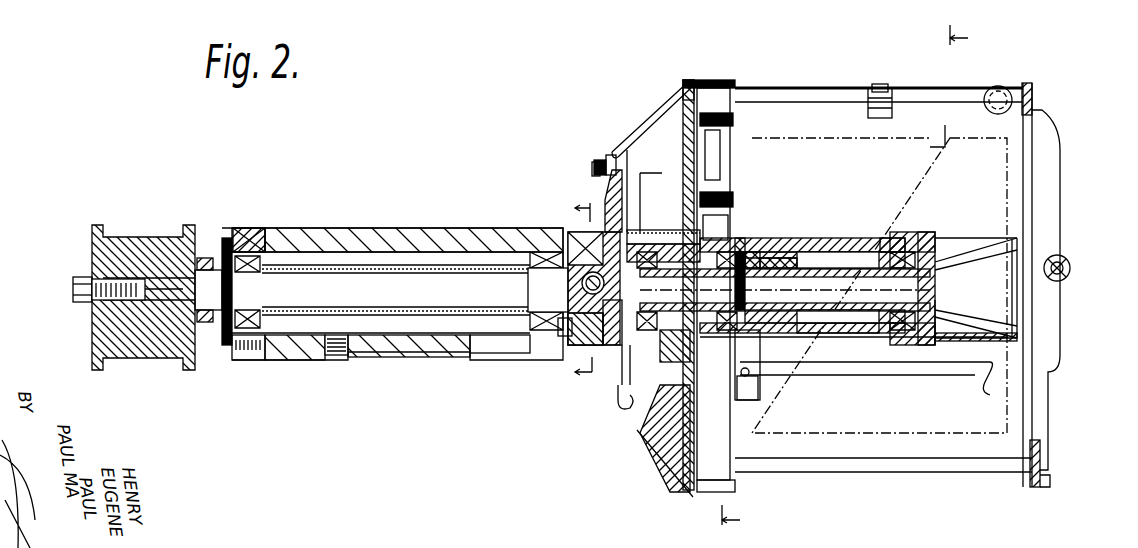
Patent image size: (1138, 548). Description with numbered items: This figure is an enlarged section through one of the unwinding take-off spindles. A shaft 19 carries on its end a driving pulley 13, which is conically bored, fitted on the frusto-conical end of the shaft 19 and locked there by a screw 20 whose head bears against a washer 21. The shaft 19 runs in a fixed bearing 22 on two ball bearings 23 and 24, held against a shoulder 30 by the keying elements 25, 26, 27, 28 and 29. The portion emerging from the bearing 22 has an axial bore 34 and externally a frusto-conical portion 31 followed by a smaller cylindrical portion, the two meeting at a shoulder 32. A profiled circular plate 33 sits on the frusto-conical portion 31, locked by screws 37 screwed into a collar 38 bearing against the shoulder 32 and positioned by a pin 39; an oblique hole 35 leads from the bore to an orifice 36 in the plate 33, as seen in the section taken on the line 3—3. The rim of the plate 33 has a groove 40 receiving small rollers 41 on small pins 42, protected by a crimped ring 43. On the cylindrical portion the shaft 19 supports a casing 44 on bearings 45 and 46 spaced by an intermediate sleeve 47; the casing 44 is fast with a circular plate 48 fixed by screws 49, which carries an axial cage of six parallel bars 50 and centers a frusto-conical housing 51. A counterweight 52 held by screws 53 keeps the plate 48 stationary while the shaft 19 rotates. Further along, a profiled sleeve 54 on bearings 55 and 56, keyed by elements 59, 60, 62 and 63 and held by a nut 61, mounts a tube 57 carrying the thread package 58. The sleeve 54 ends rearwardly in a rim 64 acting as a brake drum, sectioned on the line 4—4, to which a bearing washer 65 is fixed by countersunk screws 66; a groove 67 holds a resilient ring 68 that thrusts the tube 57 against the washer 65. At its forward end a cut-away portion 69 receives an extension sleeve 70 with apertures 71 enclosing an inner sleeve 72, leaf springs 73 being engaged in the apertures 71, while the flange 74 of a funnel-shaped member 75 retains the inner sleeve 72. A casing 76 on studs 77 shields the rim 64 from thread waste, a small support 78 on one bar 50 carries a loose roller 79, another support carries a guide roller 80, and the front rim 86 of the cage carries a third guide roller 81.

The section line 3— 3 is at (582, 290).
The section line 4— 4 is at (856, 278).
The driving pulley 13 is at (143, 240).
The shaft 19 is at (314, 340).
The screw 20 is at (78, 284).
The washer 21 is at (97, 283).
The fixed bearing 22 is at (349, 343).
The ball bearing 23 is at (286, 240).
The ball bearing 24 is at (455, 235).
The keying element 25 is at (207, 258).
The keying element 26 is at (252, 256).
The keying element 27 is at (227, 256).
The keying element 28 is at (397, 345).
The keying element 29 is at (527, 284).
The shoulder 30 is at (548, 290).
The frusto-conical portion 31 is at (492, 345).
The shoulder 32 is at (588, 340).
The profiled circular plate 33 is at (620, 412).
The axial bore 34 is at (872, 305).
The oblique hole 35 is at (545, 258).
The orifice 36 is at (585, 245).
The screws 37 is at (548, 345).
The collar 38 is at (612, 350).
The pin 39 is at (590, 258).
The groove 40 is at (600, 163).
The small rollers 41 is at (606, 158).
The small pins 42 is at (595, 168).
The crimped ring 43 is at (631, 132).
The casing 44 is at (671, 352).
The bearing 45 is at (617, 353).
The bearing 46 is at (741, 343).
The intermediate sleeve 47 is at (740, 380).
The circular plate 48 is at (700, 95).
The screws 49 is at (675, 228).
The parallel bars 50 is at (822, 88).
The housing 51 is at (690, 80).
The counterweight 52 is at (663, 467).
The screws 53 is at (666, 427).
The profiled sleeve 54 is at (852, 252).
The bearing 55 is at (827, 335).
The bearing 56 is at (952, 250).
The tube 57 is at (962, 344).
The thread package 58 is at (873, 437).
The keying element 59 is at (790, 340).
The keying element 60 is at (842, 238).
The nut 61 is at (1020, 256).
The keying element 62 is at (892, 240).
The keying element 63 is at (912, 252).
The rim 64 is at (740, 238).
The bearing washer 65 is at (748, 250).
The fixing screws 66 is at (752, 258).
The groove 67 is at (792, 256).
The resilient ring 68 is at (746, 268).
The cut-away portion 69 is at (907, 250).
The extension sleeve 70 is at (992, 338).
The apertures 71 is at (962, 248).
The inner sleeve 72 is at (1010, 338).
The leaf springs 73 is at (960, 236).
The flange 74 is at (1012, 326).
The funnel-shaped member 75 is at (1010, 310).
The casing 76 is at (713, 494).
The studs 77 is at (705, 192).
The small support 78 is at (878, 88).
The loose roller 79 is at (888, 88).
The loose guide roller 80 is at (1004, 87).
The third loose guide roller 81 is at (1071, 268).
The front rim 86 is at (1045, 482).